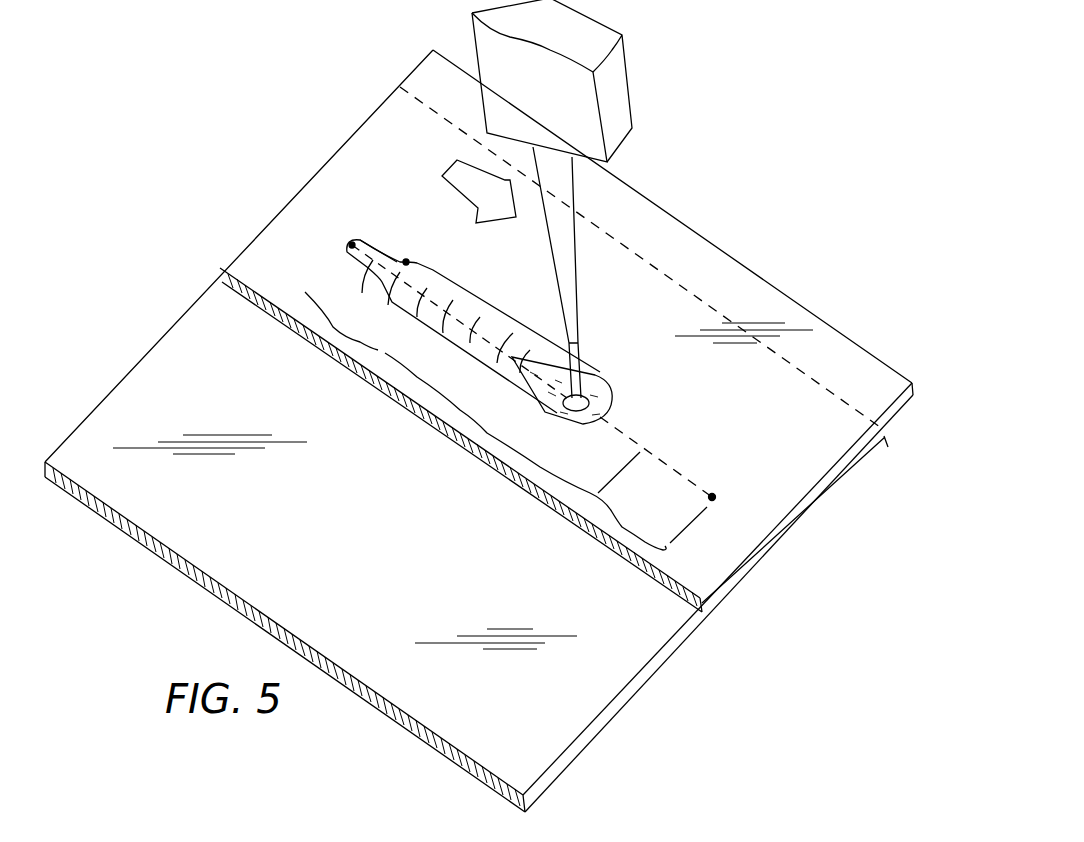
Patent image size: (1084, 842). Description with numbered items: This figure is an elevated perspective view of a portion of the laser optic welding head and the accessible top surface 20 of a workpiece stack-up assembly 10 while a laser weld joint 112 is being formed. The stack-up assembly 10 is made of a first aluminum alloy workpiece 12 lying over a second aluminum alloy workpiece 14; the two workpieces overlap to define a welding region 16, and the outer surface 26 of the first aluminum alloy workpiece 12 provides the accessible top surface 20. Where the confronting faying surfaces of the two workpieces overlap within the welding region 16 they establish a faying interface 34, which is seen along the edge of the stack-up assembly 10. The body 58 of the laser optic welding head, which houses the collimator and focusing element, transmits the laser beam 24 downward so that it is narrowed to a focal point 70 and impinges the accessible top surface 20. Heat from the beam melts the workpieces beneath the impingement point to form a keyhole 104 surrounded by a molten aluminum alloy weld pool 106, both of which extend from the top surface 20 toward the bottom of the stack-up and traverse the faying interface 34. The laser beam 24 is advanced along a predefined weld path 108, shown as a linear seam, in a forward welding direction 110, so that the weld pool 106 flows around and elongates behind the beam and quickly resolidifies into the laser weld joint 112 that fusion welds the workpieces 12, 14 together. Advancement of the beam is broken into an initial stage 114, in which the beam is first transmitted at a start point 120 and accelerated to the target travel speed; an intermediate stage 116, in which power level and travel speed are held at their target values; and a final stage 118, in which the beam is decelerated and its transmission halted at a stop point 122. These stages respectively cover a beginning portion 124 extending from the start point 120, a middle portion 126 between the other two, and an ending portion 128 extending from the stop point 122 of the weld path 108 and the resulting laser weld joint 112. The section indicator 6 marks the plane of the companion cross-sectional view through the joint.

The workpiece stack-up assembly 10 is at (500, 431).
The first aluminum alloy workpiece 12 is at (900, 397).
The second aluminum alloy workpiece 14 is at (648, 677).
The welding region 16 is at (247, 277).
The accessible top surface 20 is at (640, 292).
The outer surface 26 is at (640, 292).
The laser beam 24 is at (574, 270).
The faying interface 34 is at (838, 480).
The body 58 is at (491, 90).
The focal point 70 is at (581, 343).
The keyhole 104 is at (583, 404).
The molten aluminum alloy weld pool 106 is at (605, 388).
The weld path 108 is at (406, 262).
The forward welding direction 110 is at (467, 163).
The laser weld joint 112 is at (436, 280).
The initial stage 114 is at (335, 330).
The intermediate stage 116 is at (460, 440).
The final stage 118 is at (613, 531).
The start point 120 is at (352, 245).
The stop point 122 is at (714, 493).
The beginning portion 124 is at (378, 262).
The middle portion 126 is at (459, 353).
The ending portion 128 is at (650, 456).
The section line for FIG. 6 is at (243, 167).